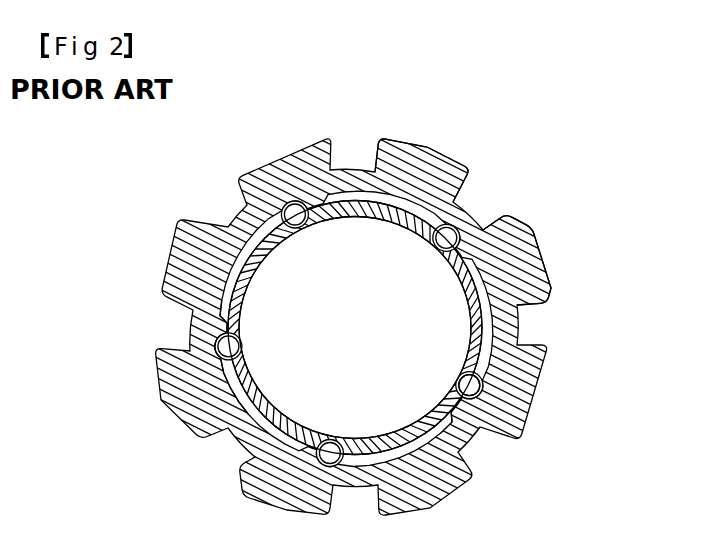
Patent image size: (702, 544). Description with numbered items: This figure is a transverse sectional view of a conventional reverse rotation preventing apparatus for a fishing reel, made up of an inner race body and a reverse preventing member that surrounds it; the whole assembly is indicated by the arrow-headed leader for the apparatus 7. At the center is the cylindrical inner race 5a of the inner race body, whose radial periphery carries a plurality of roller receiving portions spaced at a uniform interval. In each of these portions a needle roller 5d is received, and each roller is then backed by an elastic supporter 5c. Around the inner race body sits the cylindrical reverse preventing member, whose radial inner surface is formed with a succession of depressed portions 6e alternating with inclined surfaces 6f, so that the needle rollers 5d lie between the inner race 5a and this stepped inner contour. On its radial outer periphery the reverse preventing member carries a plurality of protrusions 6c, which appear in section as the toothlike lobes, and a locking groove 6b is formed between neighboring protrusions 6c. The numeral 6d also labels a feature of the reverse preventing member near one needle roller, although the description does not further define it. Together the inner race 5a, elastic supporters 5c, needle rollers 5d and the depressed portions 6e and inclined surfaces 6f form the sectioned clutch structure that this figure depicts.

The one-way clutch (prior art) 7 is at (175, 227).
The inner race 5a is at (485, 323).
The elastic supporter 5c is at (480, 428).
The needle roller 5d is at (480, 381).
The locking groove 6b is at (473, 213).
The protrusion 6c is at (536, 259).
The ball pocket 6d is at (212, 354).
The depressed portion 6e is at (206, 344).
The inclined surface 6f is at (212, 366).